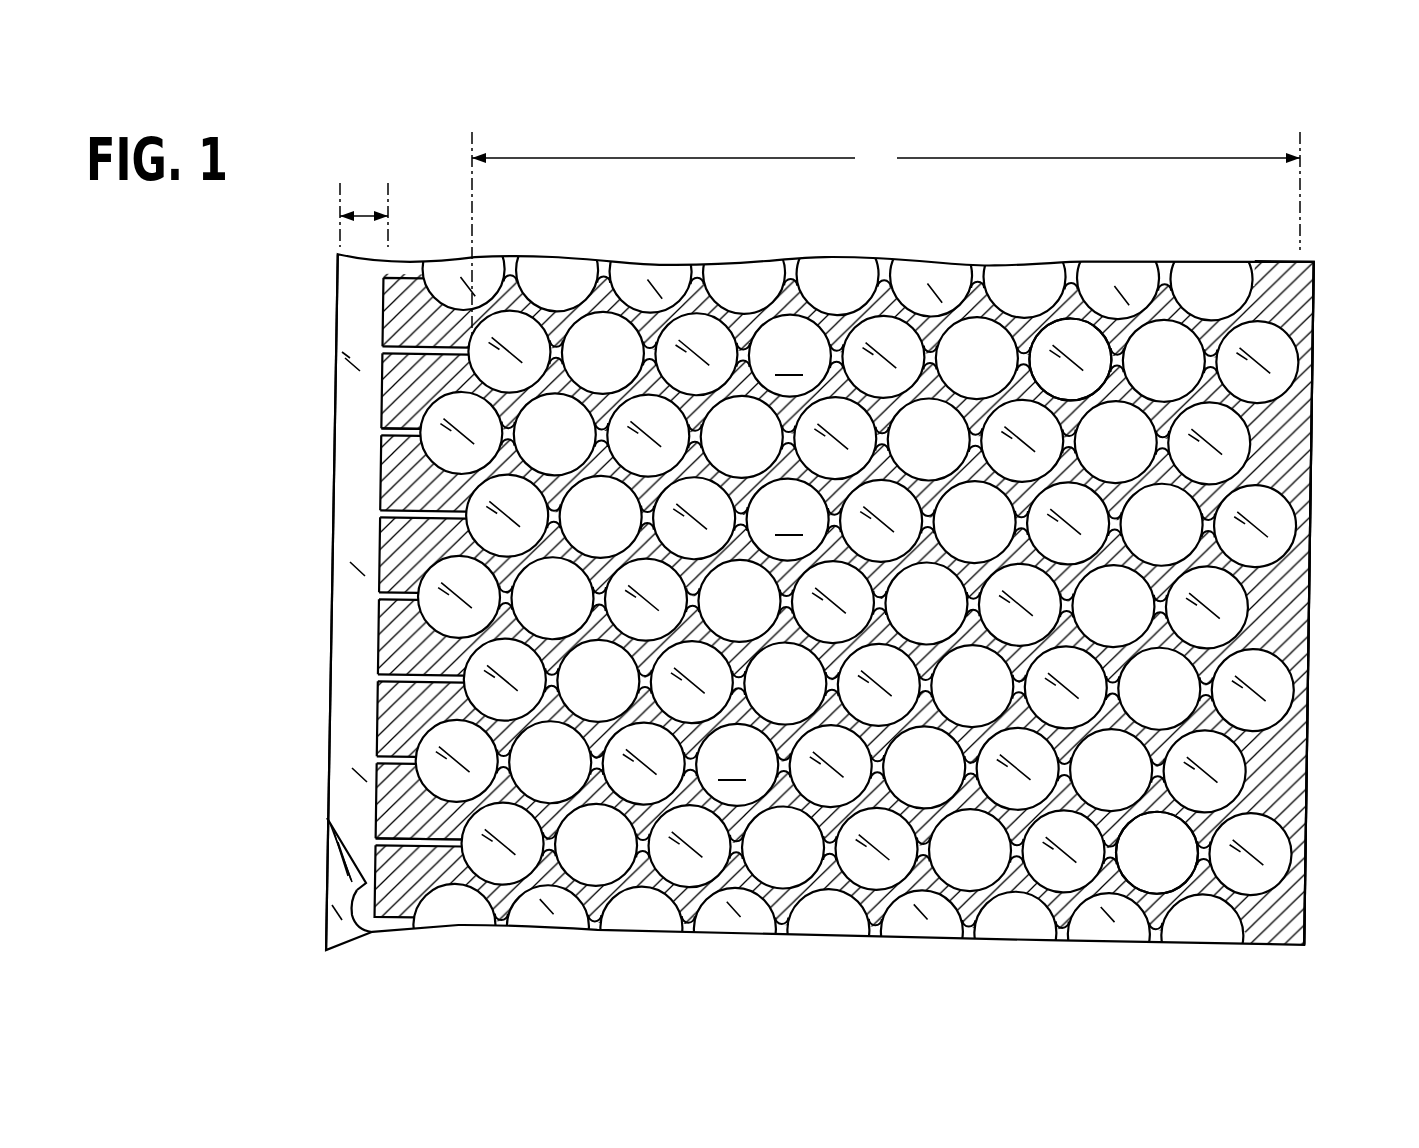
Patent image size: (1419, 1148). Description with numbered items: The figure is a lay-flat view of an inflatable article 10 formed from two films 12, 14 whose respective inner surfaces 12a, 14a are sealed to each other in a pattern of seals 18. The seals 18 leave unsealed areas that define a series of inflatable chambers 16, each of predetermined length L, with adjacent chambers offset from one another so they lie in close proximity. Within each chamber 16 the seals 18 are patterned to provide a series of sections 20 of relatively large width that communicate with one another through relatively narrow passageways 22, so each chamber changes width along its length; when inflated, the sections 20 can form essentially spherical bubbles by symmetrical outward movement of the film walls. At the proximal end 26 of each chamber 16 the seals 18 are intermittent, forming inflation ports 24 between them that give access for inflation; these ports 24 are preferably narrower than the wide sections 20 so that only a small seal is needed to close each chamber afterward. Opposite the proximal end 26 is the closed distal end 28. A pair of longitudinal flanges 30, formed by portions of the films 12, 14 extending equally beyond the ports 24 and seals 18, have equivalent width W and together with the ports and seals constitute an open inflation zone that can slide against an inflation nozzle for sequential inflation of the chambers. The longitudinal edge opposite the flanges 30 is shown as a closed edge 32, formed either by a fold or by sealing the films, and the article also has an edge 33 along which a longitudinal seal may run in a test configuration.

The inflatable article 10 is at (1357, 278).
The film 12 is at (363, 898).
The inner surface 12a is at (350, 857).
The film 14 is at (342, 953).
The inner surface 14a is at (322, 917).
The inflatable chamber 16 is at (856, 602).
The seal 18 is at (388, 469).
The section of relatively large width 20 is at (1068, 340).
The passageway 22 is at (1028, 353).
The inflation port 24 is at (387, 352).
The proximal end 26 is at (410, 424).
The distal end 28 is at (1256, 447).
The longitudinal flange 30 is at (338, 893).
The closed edge 32 is at (1313, 595).
The edge 33 is at (325, 705).
The width W is at (362, 215).
The length L is at (886, 233).